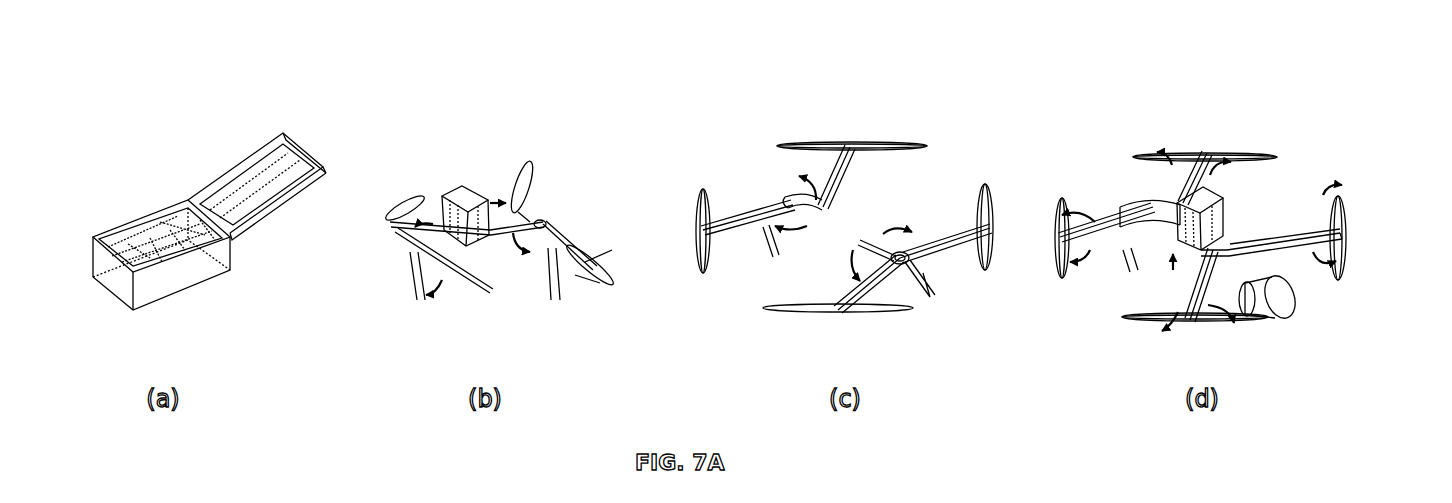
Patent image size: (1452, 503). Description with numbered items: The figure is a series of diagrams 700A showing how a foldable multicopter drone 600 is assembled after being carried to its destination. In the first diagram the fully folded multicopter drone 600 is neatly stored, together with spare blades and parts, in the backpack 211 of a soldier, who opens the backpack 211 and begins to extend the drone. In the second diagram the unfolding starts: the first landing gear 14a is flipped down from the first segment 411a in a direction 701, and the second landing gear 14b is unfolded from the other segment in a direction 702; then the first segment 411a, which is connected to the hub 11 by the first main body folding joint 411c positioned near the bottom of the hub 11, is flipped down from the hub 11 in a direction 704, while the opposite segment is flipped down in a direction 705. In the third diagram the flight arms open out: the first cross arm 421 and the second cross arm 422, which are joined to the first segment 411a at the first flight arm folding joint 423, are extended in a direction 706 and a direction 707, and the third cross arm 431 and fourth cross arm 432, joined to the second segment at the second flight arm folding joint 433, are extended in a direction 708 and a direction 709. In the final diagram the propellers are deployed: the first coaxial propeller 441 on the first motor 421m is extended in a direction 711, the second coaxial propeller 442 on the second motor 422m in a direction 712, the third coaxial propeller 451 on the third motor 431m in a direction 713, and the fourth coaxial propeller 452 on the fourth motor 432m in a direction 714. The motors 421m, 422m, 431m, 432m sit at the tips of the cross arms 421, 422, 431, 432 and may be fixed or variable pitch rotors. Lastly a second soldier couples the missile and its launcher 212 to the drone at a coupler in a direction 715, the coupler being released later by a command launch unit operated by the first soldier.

The series of diagrams 700A is at (968, 91).
The multicopter drone 600 is at (147, 233).
The backpack 211 is at (250, 162).
The hub 11 is at (458, 187).
The first landing gear 14a is at (549, 277).
The second landing gear 14b is at (407, 267).
The first segment 411a is at (502, 232).
The first main body folding joint 411c is at (1215, 245).
The first cross arm 421 is at (530, 202).
The second cross arm 422 is at (572, 252).
The first flight arm folding joint 423 is at (540, 221).
The third cross arm 431 is at (830, 170).
The fourth cross arm 432 is at (738, 220).
The second flight arm folding joint 433 is at (785, 197).
The third motor 431m is at (1200, 153).
The fourth motor 432m is at (1057, 235).
The first motor 421m is at (1340, 233).
The second motor 422m is at (1198, 320).
The first coaxial propeller 441 is at (1335, 215).
The second coaxial propeller 442 is at (1145, 315).
The third coaxial propeller 451 is at (1235, 155).
The fourth coaxial propeller 452 is at (1068, 272).
The missile and launcher 212 is at (1290, 295).
The direction 701 is at (526, 255).
The direction 702 is at (1120, 257).
The direction 704 is at (491, 190).
The direction 705 is at (427, 216).
The direction 706 is at (905, 221).
The direction 707 is at (838, 265).
The direction 708 is at (799, 176).
The direction 709 is at (792, 238).
The direction 711 is at (1329, 224).
The direction 712 is at (1196, 331).
The direction 713 is at (1203, 159).
The direction 714 is at (1090, 226).
The direction 715 is at (1172, 270).